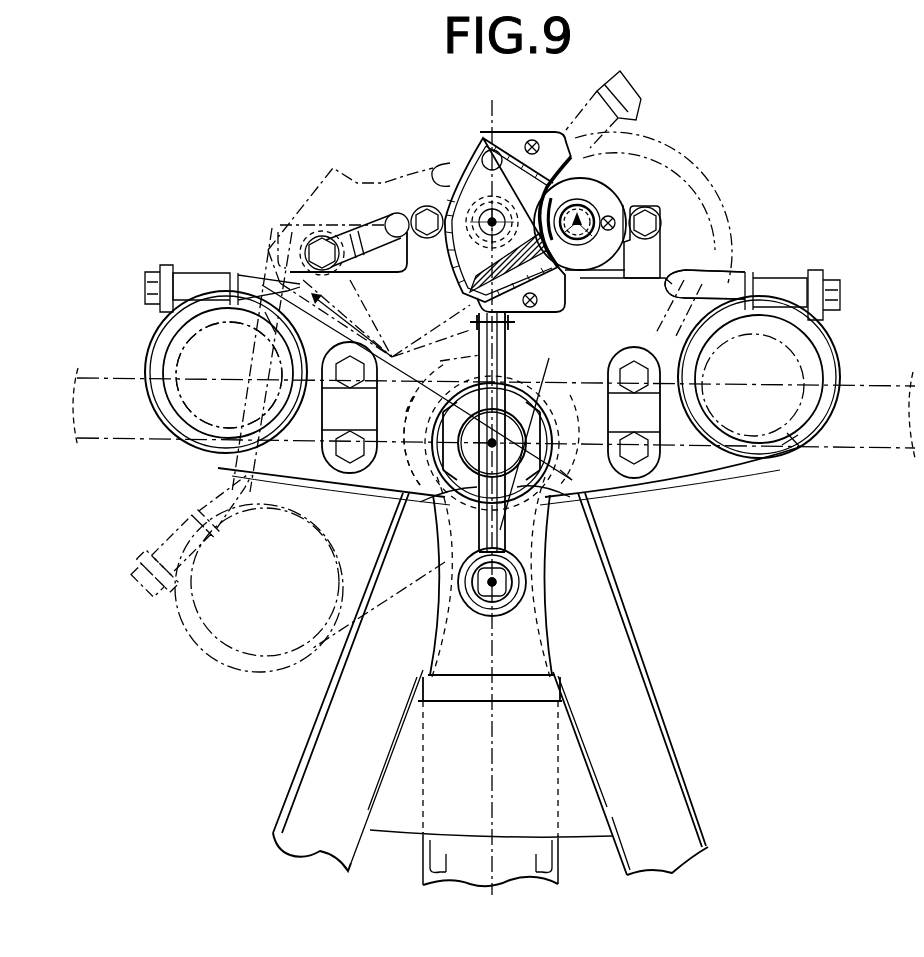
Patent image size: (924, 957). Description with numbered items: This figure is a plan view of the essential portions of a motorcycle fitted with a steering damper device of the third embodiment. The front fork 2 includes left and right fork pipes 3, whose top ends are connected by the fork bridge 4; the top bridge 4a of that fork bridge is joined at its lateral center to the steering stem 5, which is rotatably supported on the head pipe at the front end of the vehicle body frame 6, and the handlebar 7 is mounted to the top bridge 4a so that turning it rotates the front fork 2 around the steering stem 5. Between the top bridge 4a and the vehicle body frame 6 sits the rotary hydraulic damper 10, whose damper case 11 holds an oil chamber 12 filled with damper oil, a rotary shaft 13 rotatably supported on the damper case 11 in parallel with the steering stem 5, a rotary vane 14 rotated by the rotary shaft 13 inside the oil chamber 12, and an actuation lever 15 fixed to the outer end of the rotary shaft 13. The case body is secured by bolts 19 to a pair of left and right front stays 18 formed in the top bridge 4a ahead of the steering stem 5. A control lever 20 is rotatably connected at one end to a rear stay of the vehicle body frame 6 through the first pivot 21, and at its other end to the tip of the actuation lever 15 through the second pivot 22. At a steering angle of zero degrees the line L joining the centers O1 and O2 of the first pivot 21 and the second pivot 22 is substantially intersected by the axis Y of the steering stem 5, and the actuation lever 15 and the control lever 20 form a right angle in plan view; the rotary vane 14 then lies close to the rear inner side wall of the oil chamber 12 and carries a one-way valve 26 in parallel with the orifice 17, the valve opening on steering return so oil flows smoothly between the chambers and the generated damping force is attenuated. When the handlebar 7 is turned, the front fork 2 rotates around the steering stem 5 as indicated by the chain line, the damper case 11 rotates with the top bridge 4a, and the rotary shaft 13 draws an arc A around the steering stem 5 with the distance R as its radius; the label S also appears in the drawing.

The front fork 2 is at (842, 354).
The fork pipes 3 is at (158, 352).
The fork bridge 4 is at (676, 274).
The top bridge 4a is at (717, 302).
The steering stem 5 is at (517, 414).
The vehicle body frame 6 is at (673, 735).
The handlebar 7 is at (885, 452).
The rotary hydraulic damper 10 is at (580, 152).
The damper case 11 is at (462, 150).
The oil chamber 12 is at (484, 152).
The rotary shaft 13 is at (596, 240).
The rotary vane 14 is at (480, 318).
The actuation lever 15 is at (585, 196).
The orifice 17 is at (464, 268).
The front stays 18 is at (392, 220).
The bolts 19 is at (428, 208).
The control lever 20 is at (405, 508).
The first pivot 21 is at (480, 592).
The second pivot 22 is at (455, 170).
The one-way valve 26 is at (558, 277).
The center of the first pivot O1 is at (500, 587).
The center of the second pivot O2 is at (496, 218).
The arc A is at (268, 363).
The line connecting the pivot centers L is at (450, 367).
The distance R is at (403, 440).
The steering center S is at (529, 430).
The axis of the steering stem Y is at (565, 463).